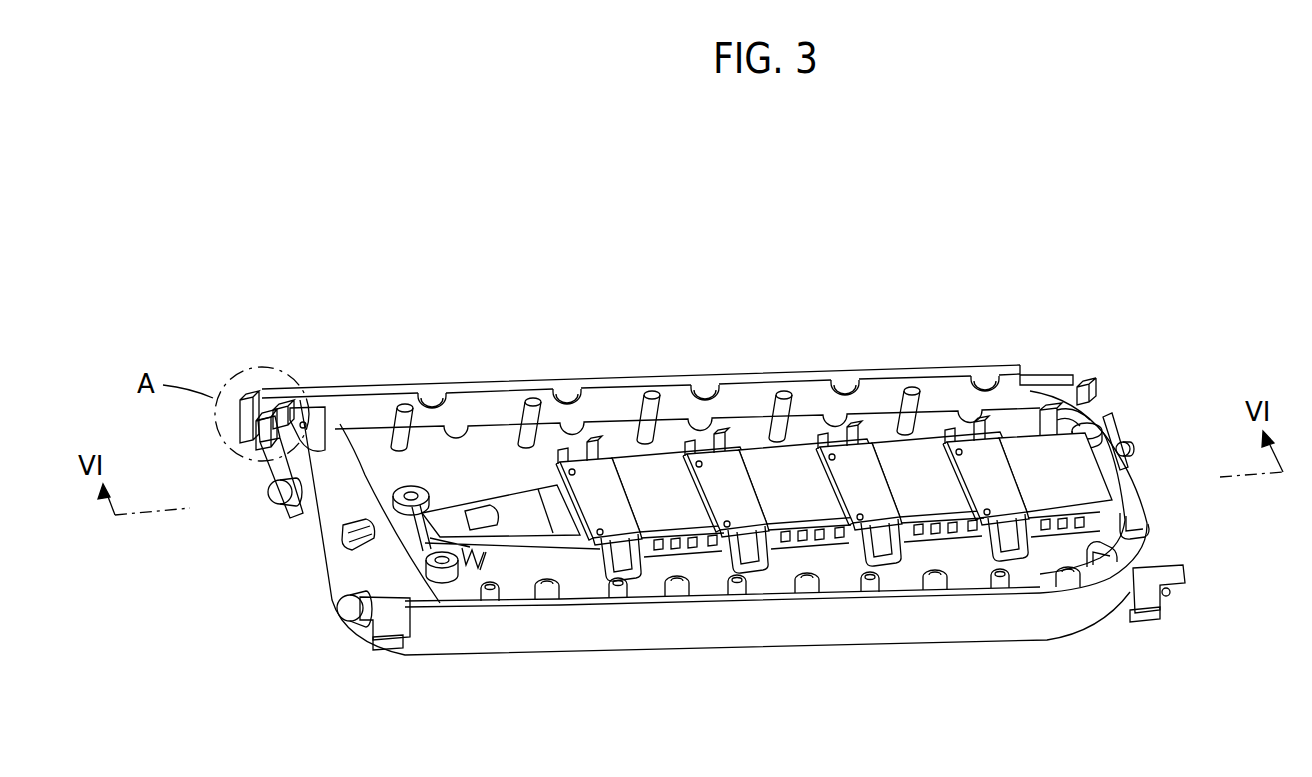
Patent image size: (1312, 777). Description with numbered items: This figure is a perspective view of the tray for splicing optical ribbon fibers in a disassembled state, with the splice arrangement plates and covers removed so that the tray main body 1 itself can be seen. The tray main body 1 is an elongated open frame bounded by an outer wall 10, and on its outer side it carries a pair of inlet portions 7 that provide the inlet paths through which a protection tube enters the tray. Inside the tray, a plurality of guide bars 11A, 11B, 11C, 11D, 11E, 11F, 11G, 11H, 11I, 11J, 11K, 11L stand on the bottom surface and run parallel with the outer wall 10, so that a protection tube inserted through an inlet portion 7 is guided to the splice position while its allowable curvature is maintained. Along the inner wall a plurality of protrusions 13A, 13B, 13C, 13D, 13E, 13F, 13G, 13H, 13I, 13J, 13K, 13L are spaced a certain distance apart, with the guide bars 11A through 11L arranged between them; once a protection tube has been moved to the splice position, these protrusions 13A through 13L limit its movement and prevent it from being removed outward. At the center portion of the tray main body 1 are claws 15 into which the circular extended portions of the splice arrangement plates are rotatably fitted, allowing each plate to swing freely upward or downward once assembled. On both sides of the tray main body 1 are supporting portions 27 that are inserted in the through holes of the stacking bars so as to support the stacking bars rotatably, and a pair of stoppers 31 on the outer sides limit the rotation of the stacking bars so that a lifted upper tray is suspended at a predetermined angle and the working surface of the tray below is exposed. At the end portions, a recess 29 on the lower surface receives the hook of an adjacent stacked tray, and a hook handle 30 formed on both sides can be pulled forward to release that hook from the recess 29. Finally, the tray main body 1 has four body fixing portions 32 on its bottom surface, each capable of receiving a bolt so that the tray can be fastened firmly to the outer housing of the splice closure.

The tray main body 1 is at (478, 396).
The inlet portion 7 is at (259, 398).
The outer wall 10 is at (443, 645).
The guide bar 11A is at (403, 404).
The guide bar 11B is at (531, 398).
The guide bar 11C is at (650, 391).
The guide bar 11D is at (782, 391).
The guide bar 11E is at (910, 387).
The guide bar 11F is at (1037, 383).
The guide bar 11G is at (1115, 557).
The guide bar 11H is at (1000, 591).
The guide bar 11I is at (870, 595).
The guide bar 11J is at (737, 598).
The guide bar 11K is at (618, 601).
The guide bar 11L is at (490, 604).
The protrusion 13A is at (432, 392).
The protrusion 13B is at (567, 388).
The protrusion 13C is at (705, 384).
The protrusion 13D is at (845, 380).
The protrusion 13E is at (985, 376).
The protrusion 13F is at (1088, 425).
The protrusion 13G is at (1135, 522).
The protrusion 13H is at (1068, 590).
The protrusion 13I is at (935, 594).
The protrusion 13J is at (807, 597).
The protrusion 13K is at (677, 600).
The protrusion 13L is at (547, 603).
The claw 15 is at (340, 503).
The supporting portion 27 is at (270, 498).
The recess 29 is at (388, 650).
The hook handle 30 is at (393, 613).
The stopper 31 is at (262, 478).
The body fixing portion 32 is at (402, 487).